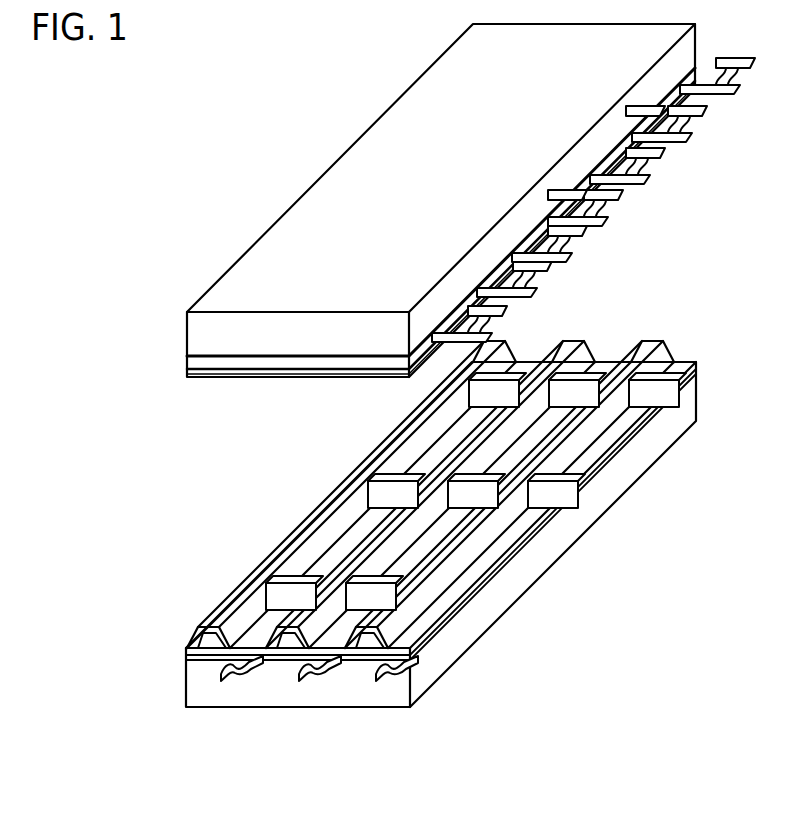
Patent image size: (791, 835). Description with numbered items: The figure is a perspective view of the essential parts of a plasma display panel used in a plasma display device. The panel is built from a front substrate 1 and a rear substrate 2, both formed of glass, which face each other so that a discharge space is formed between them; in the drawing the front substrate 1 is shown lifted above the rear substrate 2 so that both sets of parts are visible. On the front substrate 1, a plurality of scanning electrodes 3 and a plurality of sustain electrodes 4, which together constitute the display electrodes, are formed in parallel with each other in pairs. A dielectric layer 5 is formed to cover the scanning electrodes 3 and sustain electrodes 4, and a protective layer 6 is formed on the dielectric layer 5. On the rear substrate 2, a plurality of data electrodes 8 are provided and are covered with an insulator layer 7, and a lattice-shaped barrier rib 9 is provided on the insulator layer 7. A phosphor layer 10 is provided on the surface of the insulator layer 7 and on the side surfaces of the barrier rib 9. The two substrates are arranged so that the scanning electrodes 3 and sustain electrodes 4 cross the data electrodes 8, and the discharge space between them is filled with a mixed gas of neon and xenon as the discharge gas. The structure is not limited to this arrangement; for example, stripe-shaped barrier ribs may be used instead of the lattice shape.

The front substrate 1 is at (197, 333).
The rear substrate 2 is at (198, 682).
The scanning electrodes 3 is at (707, 113).
The sustain electrodes 4 is at (672, 157).
The dielectric layer 5 is at (197, 363).
The protective layer 6 is at (190, 377).
The insulator layer 7 is at (193, 658).
The data electrodes 8 is at (390, 675).
The barrier rib 9 is at (680, 360).
The phosphor layer 10 is at (240, 625).